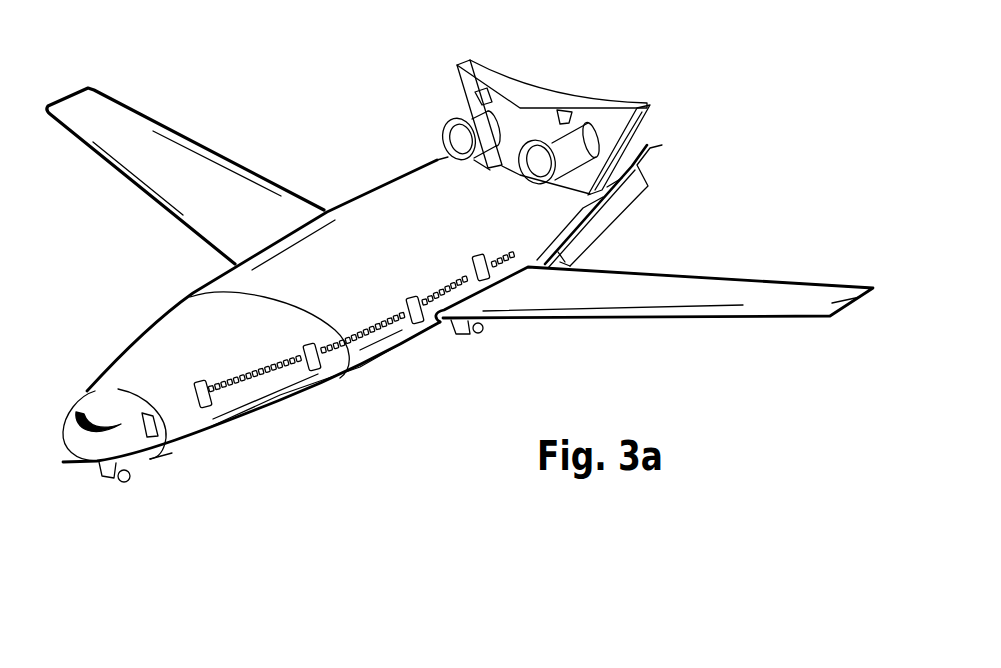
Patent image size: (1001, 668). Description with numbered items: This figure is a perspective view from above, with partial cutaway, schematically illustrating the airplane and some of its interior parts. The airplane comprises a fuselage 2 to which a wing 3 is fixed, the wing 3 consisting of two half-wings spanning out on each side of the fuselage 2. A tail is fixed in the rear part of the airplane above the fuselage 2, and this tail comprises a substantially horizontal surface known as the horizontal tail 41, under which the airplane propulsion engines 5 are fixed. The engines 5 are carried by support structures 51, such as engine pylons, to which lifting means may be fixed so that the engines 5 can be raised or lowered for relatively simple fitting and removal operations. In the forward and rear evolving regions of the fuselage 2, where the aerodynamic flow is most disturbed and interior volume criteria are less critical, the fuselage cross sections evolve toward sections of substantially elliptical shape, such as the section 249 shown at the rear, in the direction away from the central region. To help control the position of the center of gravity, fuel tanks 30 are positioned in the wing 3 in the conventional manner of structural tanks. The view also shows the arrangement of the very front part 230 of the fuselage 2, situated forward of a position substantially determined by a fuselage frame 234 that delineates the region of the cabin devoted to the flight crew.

The fuselage 2 is at (386, 389).
The wing 3 is at (697, 343).
The fuel tanks 30 is at (567, 294).
The horizontal tail 41 is at (507, 84).
The airplane propulsion engines 5 is at (440, 141).
The support structures of the engines 51 is at (478, 95).
The section of substantially elliptical shape 249 is at (608, 250).
The fuselage frame 234 is at (172, 445).
The very front part of the fuselage 230 is at (149, 469).